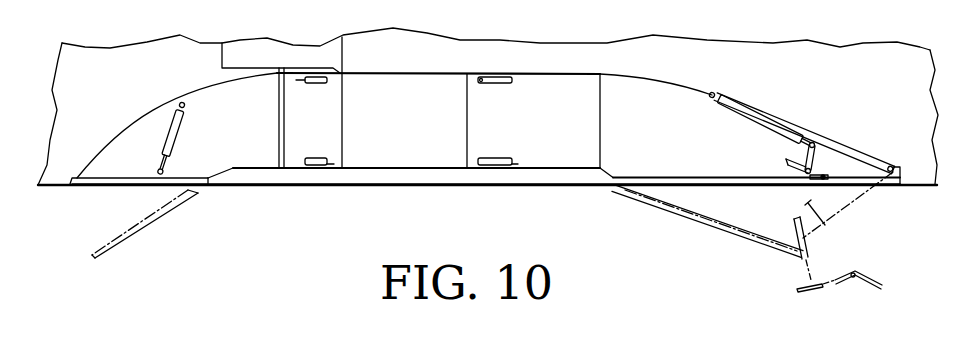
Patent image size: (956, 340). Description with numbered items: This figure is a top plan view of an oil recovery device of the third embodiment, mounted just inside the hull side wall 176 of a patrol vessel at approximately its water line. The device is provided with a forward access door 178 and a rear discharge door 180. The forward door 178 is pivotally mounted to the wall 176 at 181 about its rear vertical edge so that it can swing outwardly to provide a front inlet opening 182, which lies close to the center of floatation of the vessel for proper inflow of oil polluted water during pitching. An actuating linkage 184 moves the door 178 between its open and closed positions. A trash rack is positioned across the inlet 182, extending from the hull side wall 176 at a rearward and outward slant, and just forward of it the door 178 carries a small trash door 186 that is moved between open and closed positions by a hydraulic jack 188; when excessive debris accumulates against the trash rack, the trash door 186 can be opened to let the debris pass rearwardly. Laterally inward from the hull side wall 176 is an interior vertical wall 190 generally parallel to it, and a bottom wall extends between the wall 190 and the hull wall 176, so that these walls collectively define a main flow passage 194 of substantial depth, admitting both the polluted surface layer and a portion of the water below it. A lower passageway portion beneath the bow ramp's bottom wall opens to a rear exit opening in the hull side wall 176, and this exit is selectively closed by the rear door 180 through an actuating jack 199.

The hull side wall 176 is at (460, 185).
The forward access door 178 is at (713, 180).
The rear discharge door 180 is at (123, 236).
The pivot mounting 181 is at (613, 188).
The front inlet opening 182 is at (733, 138).
The actuating linkage 184 is at (790, 123).
The trash door 186 is at (837, 288).
The hydraulic jack 188 is at (787, 173).
The interior vertical wall 190 is at (433, 73).
The main flow passage 194 is at (642, 110).
The actuating jack 199 is at (177, 128).